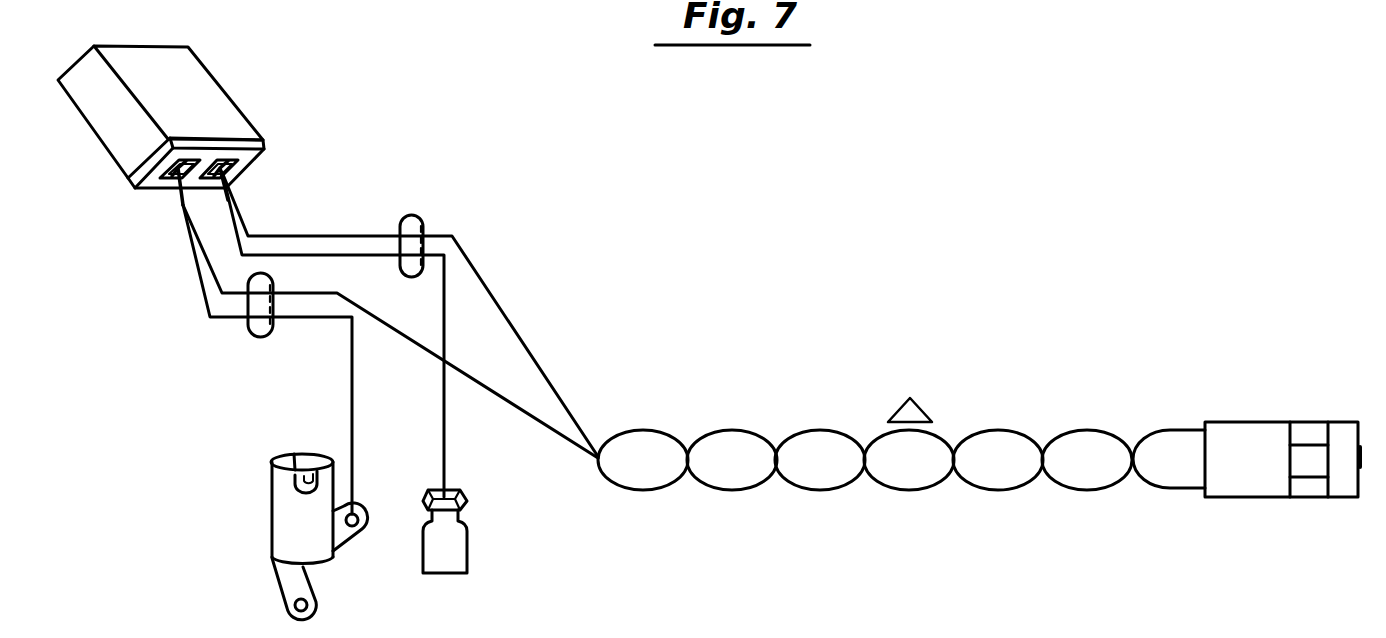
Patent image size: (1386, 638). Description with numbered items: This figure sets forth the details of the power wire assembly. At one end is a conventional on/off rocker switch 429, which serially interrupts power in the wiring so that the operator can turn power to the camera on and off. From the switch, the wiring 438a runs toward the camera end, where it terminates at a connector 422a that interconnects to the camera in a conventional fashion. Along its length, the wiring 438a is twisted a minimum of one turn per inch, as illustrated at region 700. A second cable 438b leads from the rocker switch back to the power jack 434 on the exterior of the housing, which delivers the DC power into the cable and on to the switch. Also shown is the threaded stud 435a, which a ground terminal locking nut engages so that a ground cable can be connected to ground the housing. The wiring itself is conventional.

The on/off rocker switch 429 is at (225, 120).
The wiring 438a is at (421, 215).
The cable 438b is at (268, 338).
The power jack 434 is at (272, 533).
The threaded stud 435a is at (467, 532).
The region 700 is at (1170, 390).
The connector 422a is at (1257, 422).